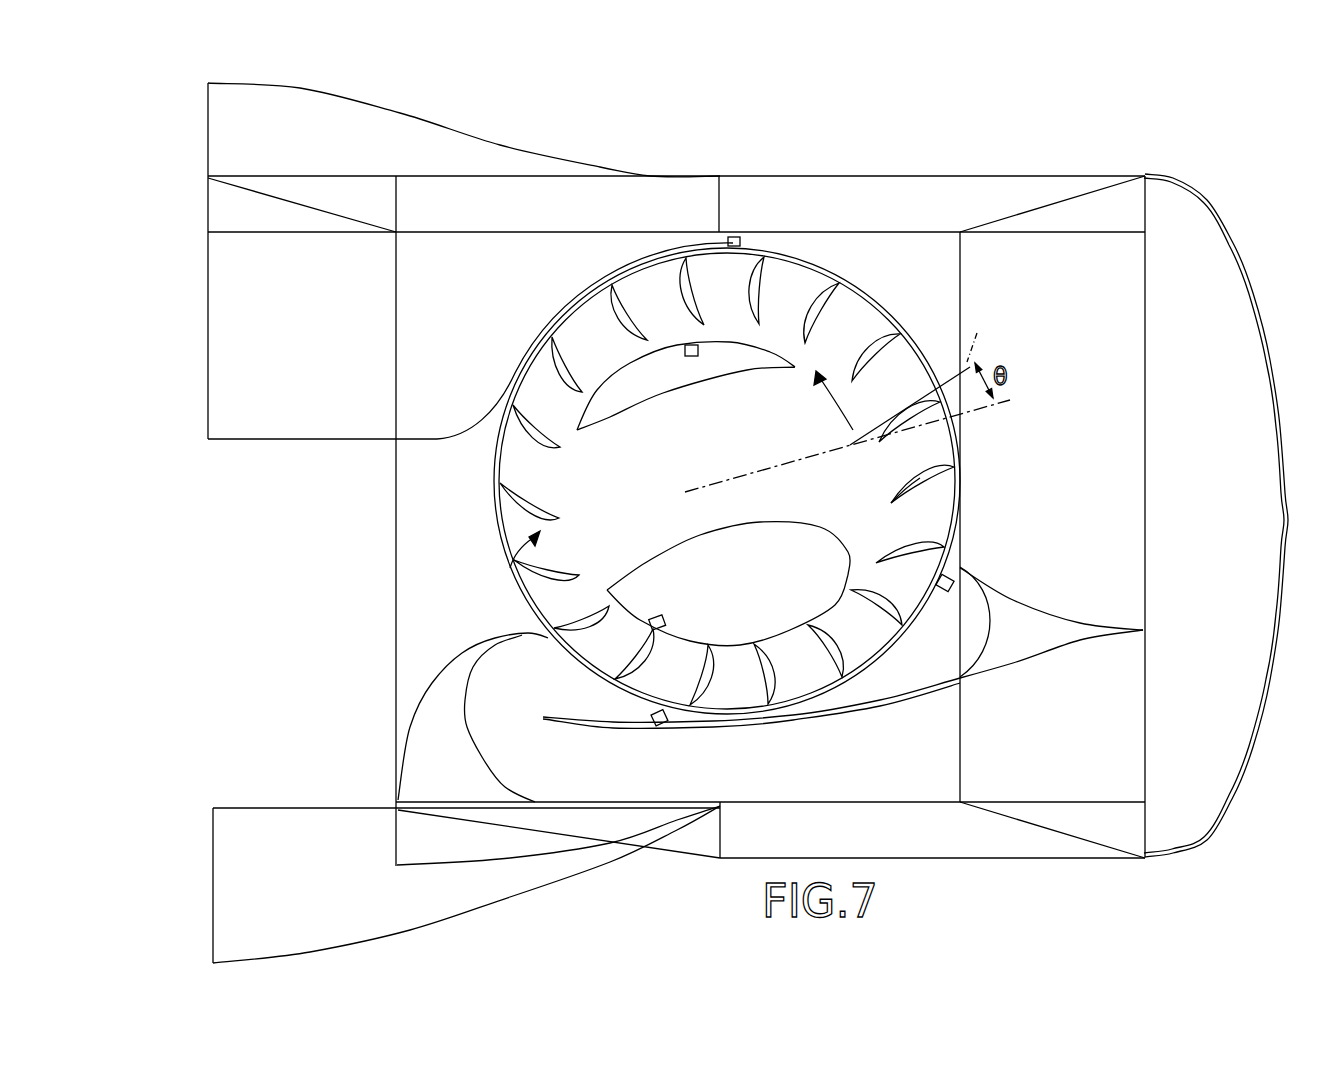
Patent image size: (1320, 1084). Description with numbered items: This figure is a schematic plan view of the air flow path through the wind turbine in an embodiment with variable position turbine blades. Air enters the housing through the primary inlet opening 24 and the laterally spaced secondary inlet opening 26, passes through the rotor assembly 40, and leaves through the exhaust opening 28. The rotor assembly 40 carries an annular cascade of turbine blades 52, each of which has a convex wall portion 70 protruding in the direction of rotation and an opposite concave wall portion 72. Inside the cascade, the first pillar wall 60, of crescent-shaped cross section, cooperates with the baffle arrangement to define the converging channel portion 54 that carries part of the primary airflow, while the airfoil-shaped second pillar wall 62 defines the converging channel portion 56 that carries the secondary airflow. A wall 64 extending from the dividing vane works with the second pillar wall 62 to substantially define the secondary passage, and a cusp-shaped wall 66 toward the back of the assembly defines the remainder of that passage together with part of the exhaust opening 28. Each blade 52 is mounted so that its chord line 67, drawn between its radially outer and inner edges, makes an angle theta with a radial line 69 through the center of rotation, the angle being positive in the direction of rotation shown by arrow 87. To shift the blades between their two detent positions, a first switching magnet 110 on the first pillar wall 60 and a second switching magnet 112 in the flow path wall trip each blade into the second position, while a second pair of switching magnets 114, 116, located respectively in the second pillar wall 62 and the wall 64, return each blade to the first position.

The primary inlet opening 24 is at (1118, 352).
The secondary inlet opening 26 is at (1100, 731).
The exhaust opening 28 is at (415, 545).
The rotor assembly 40 is at (515, 565).
The turbine blades 52 is at (752, 282).
The first channel portion 54 is at (727, 303).
The second channel portion 56 is at (678, 688).
The first pillar wall 60 is at (663, 372).
The second pillar wall 62 is at (765, 604).
The wall 64 is at (590, 724).
The cusp-shaped wall 66 is at (428, 740).
The chord line 67 is at (985, 322).
The radial line 69 is at (998, 404).
The convex wall portion 70 is at (935, 456).
The concave wall portion 72 is at (922, 484).
The arrow indicating direction of turbine rotation 87 is at (847, 410).
The first switching magnet 110 is at (693, 362).
The second switching magnet 112 is at (733, 236).
The switching magnet 114 is at (660, 617).
The switching magnet 116 is at (660, 724).